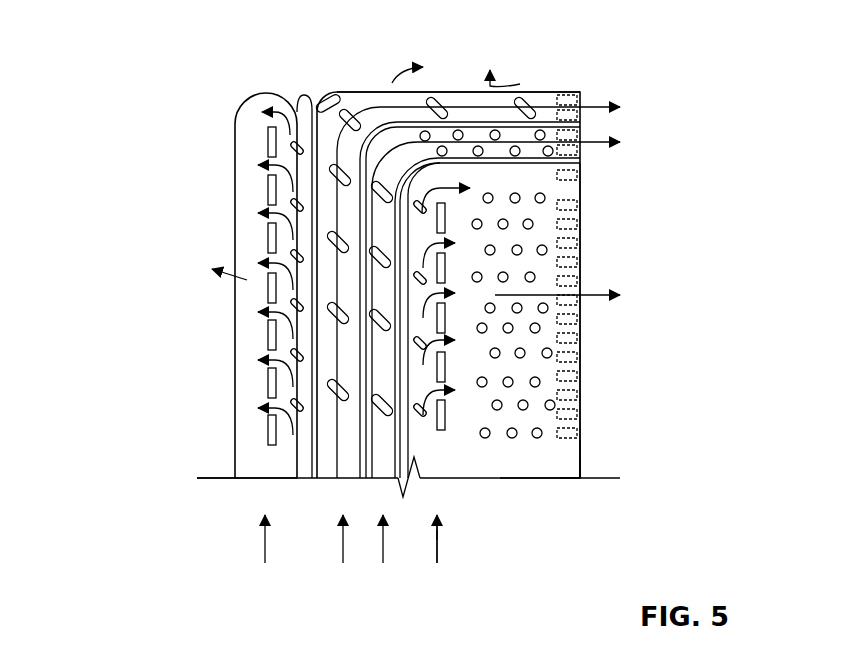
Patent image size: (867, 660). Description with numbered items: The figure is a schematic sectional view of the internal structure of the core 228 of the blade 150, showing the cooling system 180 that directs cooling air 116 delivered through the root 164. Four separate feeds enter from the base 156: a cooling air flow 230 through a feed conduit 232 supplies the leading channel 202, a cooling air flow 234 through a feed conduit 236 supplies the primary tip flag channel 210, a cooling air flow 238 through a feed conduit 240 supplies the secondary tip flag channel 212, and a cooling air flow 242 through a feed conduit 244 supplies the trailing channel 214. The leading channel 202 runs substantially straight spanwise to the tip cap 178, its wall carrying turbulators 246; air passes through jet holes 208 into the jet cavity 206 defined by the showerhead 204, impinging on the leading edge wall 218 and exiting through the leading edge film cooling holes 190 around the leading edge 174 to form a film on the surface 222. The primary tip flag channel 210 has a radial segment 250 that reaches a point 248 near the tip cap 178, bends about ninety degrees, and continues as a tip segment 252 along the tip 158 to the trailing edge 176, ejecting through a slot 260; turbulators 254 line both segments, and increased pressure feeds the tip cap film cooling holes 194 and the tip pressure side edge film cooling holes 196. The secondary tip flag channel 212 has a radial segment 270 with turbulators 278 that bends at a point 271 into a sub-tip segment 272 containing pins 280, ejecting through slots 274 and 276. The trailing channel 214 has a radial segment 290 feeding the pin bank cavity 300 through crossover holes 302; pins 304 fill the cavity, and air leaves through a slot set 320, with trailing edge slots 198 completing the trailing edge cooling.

The blade 150 is at (568, 45).
The cooling system 180 is at (237, 443).
The point 248 is at (318, 110).
The tip cap 178 is at (363, 93).
The point 271 is at (390, 100).
The tip segment 252 is at (460, 93).
The tip cap film cooling holes 194 is at (403, 93).
The tip pressure side edge film cooling holes 196 is at (520, 84).
The tip 158 is at (430, 97).
The feed conduit 236 is at (532, 90).
The slot 260 is at (582, 100).
The jet holes 208 is at (330, 362).
The primary tip flag channel 210 is at (327, 465).
The slot 274 is at (582, 128).
The slot 276 is at (582, 154).
The trailing edge 176 is at (533, 158).
The sub-tip segment 272 is at (500, 156).
The pins 280 is at (477, 162).
The feed conduit 240 is at (583, 174).
The core 228 is at (585, 255).
The radial segment 270 is at (446, 262).
The trailing edge slots 198 is at (603, 297).
The turbulators 278 is at (446, 315).
The secondary tip flag channel 212 is at (446, 363).
The crossover holes 302 is at (447, 415).
The pin bank cavity 300 is at (540, 390).
The radial segment 290 is at (489, 437).
The slot set 320 is at (586, 455).
The base 156 is at (583, 475).
The pins 304 is at (545, 478).
The trailing channel 214 is at (430, 432).
The feed conduit 244 is at (378, 485).
The cooling air flow 230 is at (265, 540).
The cooling air flow 234 is at (343, 543).
The cooling air flow 238 is at (385, 543).
The cooling air flow 242 is at (440, 553).
The cooling air 116 is at (446, 538).
The root 164 is at (498, 575).
The leading channel 202 is at (282, 472).
The feed conduit 232 is at (232, 468).
The turbulators 246 is at (248, 140).
The showerhead 204 is at (248, 136).
The leading edge wall 218 is at (236, 170).
The jet cavity 206 is at (248, 195).
The turbulators 254 is at (280, 233).
The leading edge film cooling holes 190 is at (215, 275).
The surface 222 is at (233, 312).
The leading edge 174 is at (233, 343).
The radial segment 250 is at (267, 367).